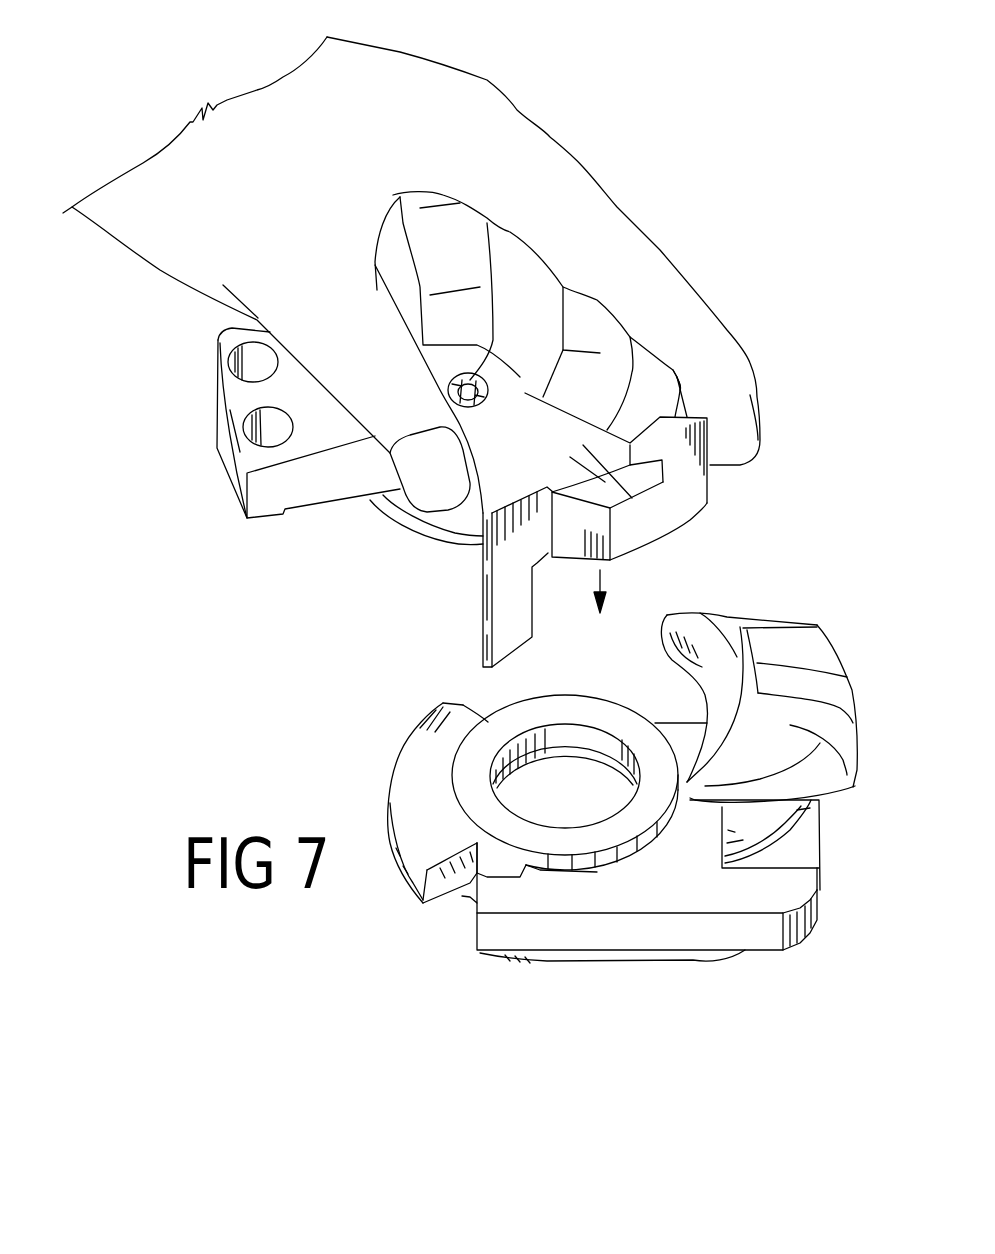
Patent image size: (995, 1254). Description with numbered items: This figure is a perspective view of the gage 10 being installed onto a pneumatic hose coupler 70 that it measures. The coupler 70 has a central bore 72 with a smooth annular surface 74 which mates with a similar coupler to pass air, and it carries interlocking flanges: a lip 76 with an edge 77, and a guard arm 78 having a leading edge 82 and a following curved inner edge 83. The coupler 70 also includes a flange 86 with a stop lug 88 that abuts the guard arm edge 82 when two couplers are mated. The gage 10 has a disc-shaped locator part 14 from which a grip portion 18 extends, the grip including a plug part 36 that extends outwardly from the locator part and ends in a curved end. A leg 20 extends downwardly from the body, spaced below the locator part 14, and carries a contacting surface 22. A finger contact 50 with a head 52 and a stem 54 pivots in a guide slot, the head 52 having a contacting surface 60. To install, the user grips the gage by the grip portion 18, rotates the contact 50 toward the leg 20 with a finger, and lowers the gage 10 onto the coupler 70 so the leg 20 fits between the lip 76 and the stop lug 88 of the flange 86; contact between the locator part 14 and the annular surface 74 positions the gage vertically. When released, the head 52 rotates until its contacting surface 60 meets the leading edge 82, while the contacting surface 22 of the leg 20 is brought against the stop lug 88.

The gage 10 is at (290, 618).
The locator part 14 is at (412, 528).
The grip portion 18 is at (508, 380).
The leg 20 is at (483, 588).
The contacting surface 22 is at (513, 600).
The plug part 36 is at (240, 397).
The finger contact 50 is at (719, 491).
The head 52 is at (667, 515).
The stem 54 is at (462, 405).
The contacting surface 60 is at (680, 375).
The pneumatic hose coupler 70 is at (749, 968).
The central bore 72 is at (568, 802).
The annular surface 74 is at (593, 713).
The lip 76 is at (413, 790).
The edge 77 is at (463, 707).
The guard arm 78 is at (797, 645).
The leading edge 82 is at (700, 780).
The following curved inner edge 83 is at (700, 677).
The flange 86 is at (513, 960).
The stop lug 88 is at (478, 897).